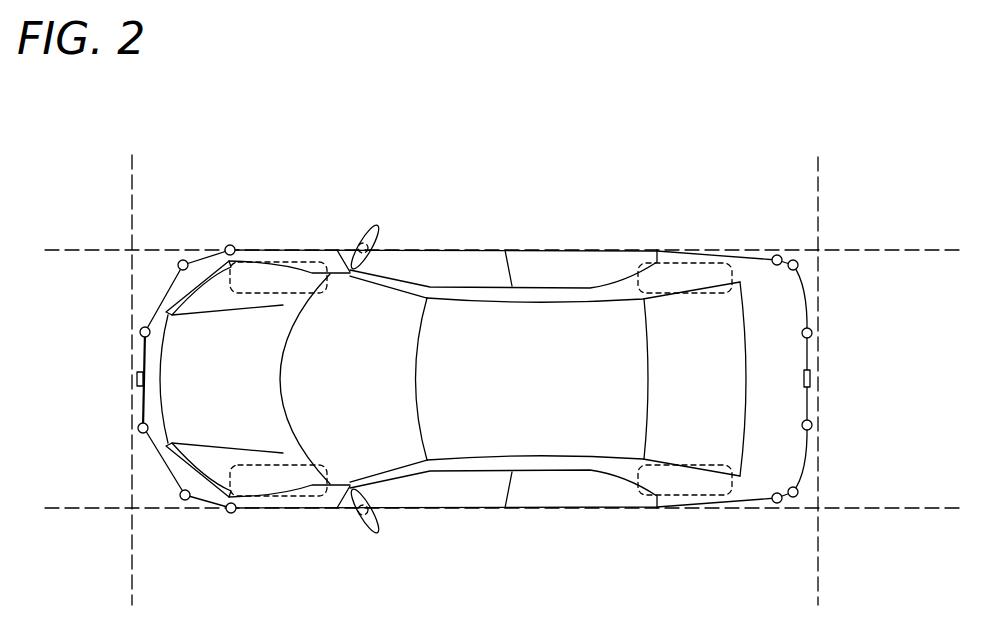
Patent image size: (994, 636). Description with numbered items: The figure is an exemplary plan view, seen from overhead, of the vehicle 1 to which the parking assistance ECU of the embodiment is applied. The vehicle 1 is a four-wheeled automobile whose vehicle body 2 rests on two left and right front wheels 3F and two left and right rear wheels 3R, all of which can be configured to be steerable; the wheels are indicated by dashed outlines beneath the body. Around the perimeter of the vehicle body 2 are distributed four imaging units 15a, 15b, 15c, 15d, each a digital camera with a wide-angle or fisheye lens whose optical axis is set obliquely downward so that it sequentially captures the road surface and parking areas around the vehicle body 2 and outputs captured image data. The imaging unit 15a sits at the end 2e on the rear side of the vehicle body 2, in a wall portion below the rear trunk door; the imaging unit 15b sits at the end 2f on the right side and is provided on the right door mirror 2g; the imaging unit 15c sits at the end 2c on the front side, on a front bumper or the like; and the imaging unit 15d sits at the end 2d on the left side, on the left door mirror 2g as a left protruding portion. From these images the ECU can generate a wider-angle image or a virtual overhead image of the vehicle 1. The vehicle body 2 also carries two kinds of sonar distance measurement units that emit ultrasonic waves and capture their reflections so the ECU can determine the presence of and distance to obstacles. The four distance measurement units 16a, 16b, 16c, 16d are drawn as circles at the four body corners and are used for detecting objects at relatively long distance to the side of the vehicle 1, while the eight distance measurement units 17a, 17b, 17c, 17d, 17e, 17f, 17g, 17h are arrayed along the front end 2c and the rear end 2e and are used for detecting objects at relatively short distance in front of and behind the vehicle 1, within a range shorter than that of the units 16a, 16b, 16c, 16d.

The vehicle 1 is at (600, 162).
The vehicle body 2 is at (761, 250).
The end on the front side of the vehicle body 2c is at (137, 397).
The end on the left side of the vehicle body 2d is at (580, 510).
The end on the rear side of the vehicle body 2e is at (812, 400).
The end on the right side of the vehicle body 2f is at (590, 250).
The door mirror 2g is at (380, 236).
The front wheels 3F is at (275, 262).
The rear wheels 3R is at (682, 262).
The imaging unit 15a is at (812, 378).
The imaging unit 15b is at (362, 243).
The imaging unit 15c is at (137, 378).
The imaging unit 15d is at (360, 522).
The distance measurement unit 16a is at (777, 504).
The distance measurement unit 16b is at (778, 255).
The distance measurement unit 16c is at (226, 247).
The distance measurement unit 16d is at (228, 513).
The distance measurement unit 17a is at (799, 492).
The distance measurement unit 17b is at (812, 427).
The distance measurement unit 17c is at (811, 332).
The distance measurement unit 17d is at (797, 262).
The distance measurement unit 17e is at (178, 265).
The distance measurement unit 17f is at (140, 331).
The distance measurement unit 17g is at (139, 430).
The distance measurement unit 17h is at (180, 495).